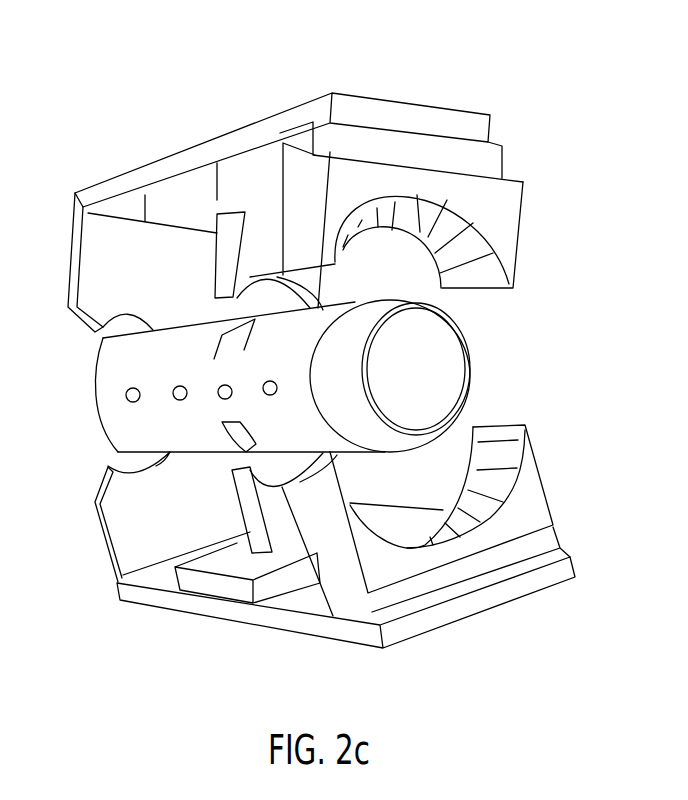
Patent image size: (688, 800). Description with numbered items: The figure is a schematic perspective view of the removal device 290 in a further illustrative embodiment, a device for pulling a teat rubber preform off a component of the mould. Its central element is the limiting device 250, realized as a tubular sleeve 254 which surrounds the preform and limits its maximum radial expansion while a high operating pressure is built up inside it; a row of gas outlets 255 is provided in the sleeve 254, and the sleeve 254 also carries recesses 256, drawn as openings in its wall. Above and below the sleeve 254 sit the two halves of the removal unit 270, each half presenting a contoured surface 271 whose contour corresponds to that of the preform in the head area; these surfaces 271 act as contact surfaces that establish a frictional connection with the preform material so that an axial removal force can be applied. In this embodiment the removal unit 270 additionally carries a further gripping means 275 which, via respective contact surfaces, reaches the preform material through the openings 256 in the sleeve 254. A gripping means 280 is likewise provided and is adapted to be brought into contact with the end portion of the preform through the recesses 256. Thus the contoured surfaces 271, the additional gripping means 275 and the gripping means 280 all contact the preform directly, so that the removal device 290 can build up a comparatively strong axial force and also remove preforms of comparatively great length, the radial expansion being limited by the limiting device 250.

The removal device 290 is at (423, 96).
The removal unit 270 is at (508, 227).
The contoured surface 271 is at (470, 277).
The further gripping means 275 is at (227, 288).
The gripping means 280 is at (95, 313).
The limiting device 250 is at (353, 358).
The tubular sleeve 254 is at (97, 392).
The gas outlets 255 is at (133, 398).
The recesses 256 is at (224, 348).